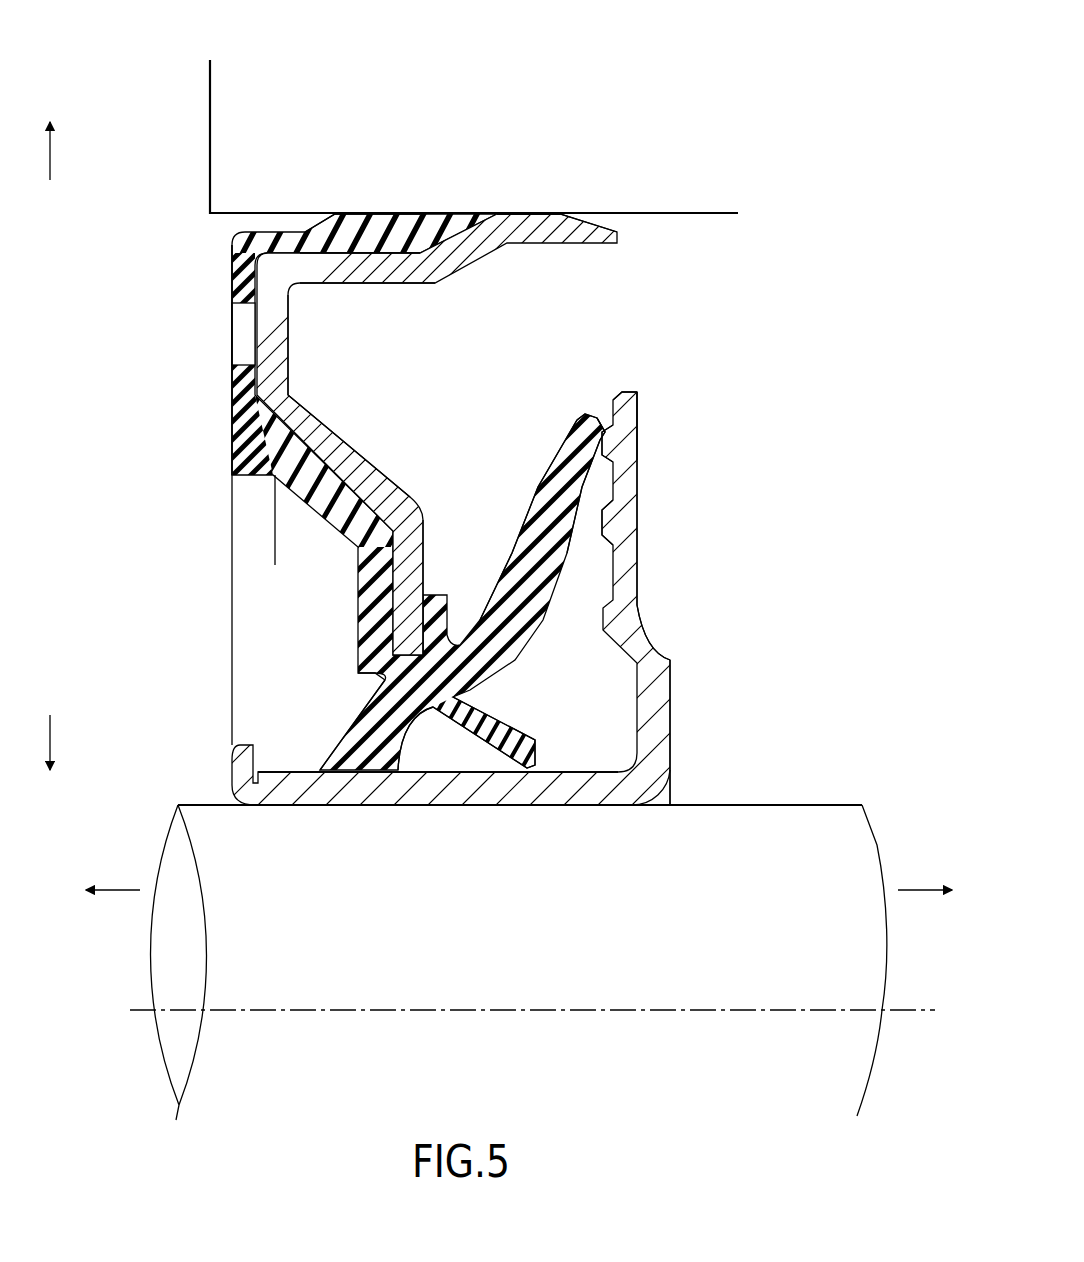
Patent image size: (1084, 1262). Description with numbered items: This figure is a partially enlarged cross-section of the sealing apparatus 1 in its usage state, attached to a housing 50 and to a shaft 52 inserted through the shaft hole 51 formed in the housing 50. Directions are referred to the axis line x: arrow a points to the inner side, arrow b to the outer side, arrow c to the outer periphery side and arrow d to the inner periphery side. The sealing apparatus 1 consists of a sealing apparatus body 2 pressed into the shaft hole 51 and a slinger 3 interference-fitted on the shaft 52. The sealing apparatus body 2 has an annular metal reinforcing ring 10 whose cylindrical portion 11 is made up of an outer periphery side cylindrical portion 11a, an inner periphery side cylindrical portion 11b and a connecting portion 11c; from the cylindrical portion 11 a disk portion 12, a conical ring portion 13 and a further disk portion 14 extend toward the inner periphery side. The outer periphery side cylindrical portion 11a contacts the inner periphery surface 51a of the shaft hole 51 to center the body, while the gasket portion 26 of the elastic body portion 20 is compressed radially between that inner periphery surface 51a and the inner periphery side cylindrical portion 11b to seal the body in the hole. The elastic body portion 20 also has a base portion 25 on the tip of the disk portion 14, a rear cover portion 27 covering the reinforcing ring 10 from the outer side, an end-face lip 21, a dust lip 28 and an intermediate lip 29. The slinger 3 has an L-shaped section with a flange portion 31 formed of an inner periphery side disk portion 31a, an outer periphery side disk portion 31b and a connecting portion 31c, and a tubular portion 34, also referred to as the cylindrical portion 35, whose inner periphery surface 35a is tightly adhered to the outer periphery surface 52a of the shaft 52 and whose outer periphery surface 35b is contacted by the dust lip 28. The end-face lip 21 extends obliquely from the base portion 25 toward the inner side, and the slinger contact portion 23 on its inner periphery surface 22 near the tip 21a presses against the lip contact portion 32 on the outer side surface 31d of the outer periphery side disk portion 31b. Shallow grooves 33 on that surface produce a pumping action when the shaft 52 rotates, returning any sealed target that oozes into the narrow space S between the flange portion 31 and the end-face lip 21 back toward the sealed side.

The sealing apparatus 1 is at (196, 236).
The sealing apparatus body 2 is at (180, 320).
The slinger 3 is at (680, 516).
The reinforcing ring 10 is at (308, 375).
The cylindrical portion 11 is at (466, 271).
The outer periphery side cylindrical portion 11a is at (541, 212).
The inner periphery side cylindrical portion 11b is at (376, 262).
The connecting portion 11c is at (472, 212).
The disk portion 12 is at (284, 336).
The conical ring portion 13 is at (352, 450).
The disk portion 14 is at (412, 550).
The elastic body portion 20 is at (298, 508).
The end-face lip 21 is at (533, 470).
The tip 21a is at (597, 424).
The inner periphery surface 22 is at (540, 606).
The slinger contact portion 23 is at (605, 434).
The base portion 25 is at (358, 673).
The gasket portion 26 is at (357, 236).
The rear cover portion 27 is at (232, 428).
The dust lip 28 is at (345, 750).
The intermediate lip 29 is at (518, 748).
The flange portion 31 is at (643, 560).
The inner periphery side disk portion 31a is at (652, 692).
The outer periphery side disk portion 31b is at (643, 418).
The connecting portion 31c is at (652, 626).
The outer side surface 31d is at (592, 428).
The lip contact portion 32 is at (617, 496).
The groove 33 is at (610, 536).
The tubular portion 34 is at (603, 808).
The cylindrical portion 35 is at (424, 802).
The inner periphery surface 35a is at (468, 808).
The outer periphery surface 35b is at (396, 770).
The housing 50 is at (708, 80).
The shaft hole 51 is at (698, 286).
The inner periphery surface 51a is at (700, 214).
The shaft 52 is at (881, 843).
The outer periphery surface 52a is at (770, 805).
The narrow space S is at (578, 522).
The axis line x is at (918, 1012).
The arrow a is at (925, 906).
The arrow b is at (113, 906).
The arrow c is at (65, 151).
The arrow d is at (66, 742).